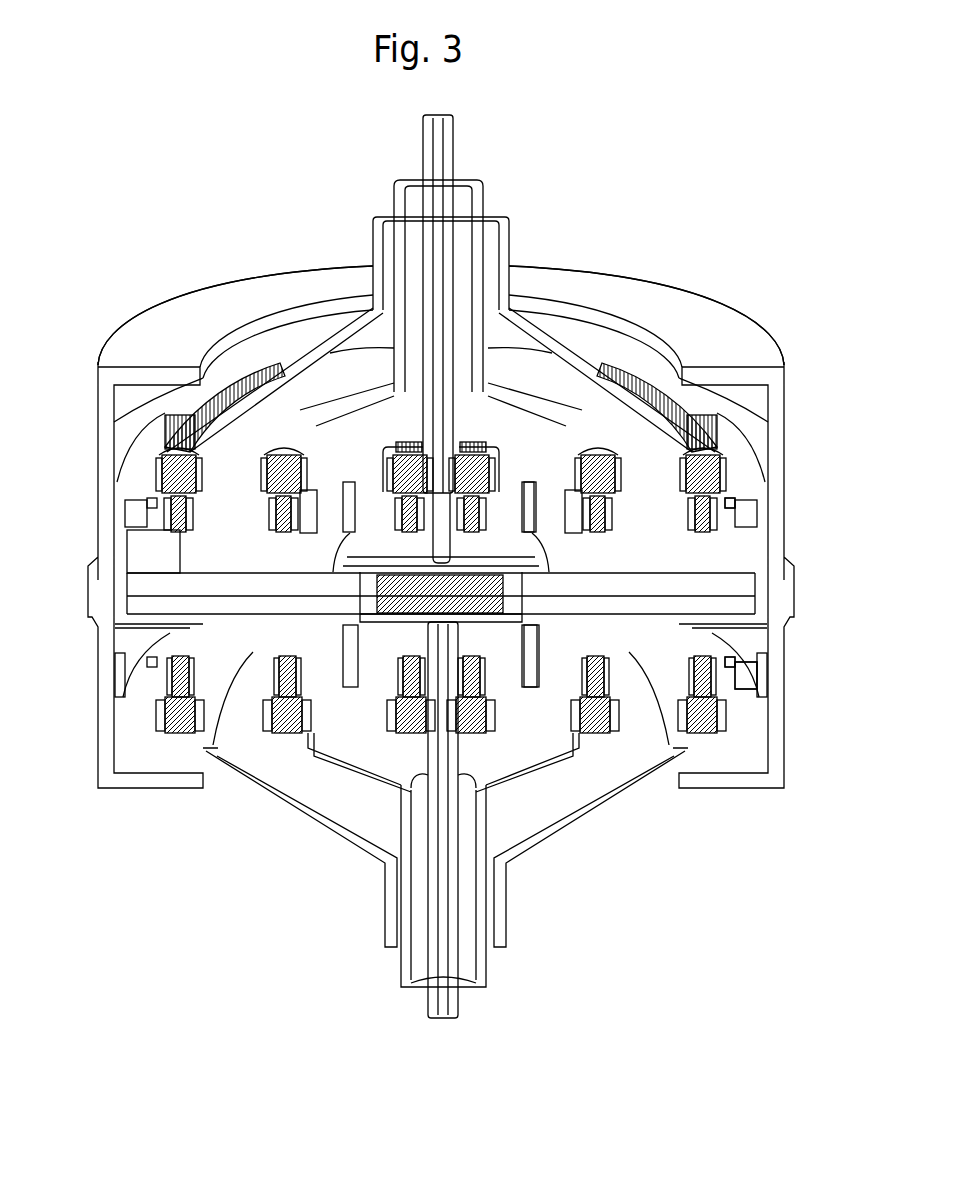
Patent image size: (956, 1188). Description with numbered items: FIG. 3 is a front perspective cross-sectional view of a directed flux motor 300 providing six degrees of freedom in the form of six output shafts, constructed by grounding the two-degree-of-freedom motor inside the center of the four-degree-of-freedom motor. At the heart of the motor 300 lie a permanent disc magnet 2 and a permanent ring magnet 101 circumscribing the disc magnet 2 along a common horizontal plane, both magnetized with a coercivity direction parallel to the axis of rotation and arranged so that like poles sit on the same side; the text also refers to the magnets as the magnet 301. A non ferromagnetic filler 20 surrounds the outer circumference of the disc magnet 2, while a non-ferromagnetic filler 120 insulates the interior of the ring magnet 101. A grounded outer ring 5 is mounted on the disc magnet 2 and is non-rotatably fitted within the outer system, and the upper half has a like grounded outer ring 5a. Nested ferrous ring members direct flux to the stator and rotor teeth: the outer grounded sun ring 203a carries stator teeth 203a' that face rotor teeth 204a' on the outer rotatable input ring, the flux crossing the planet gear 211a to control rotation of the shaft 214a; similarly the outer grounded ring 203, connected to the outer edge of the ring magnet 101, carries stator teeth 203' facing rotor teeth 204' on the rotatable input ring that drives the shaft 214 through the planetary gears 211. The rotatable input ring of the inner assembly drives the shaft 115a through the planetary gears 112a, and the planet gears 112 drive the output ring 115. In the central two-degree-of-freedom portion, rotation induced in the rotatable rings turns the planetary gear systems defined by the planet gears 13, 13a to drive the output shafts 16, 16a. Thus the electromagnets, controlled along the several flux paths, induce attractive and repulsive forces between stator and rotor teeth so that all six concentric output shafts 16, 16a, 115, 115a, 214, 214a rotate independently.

The directed flux motor 300 is at (171, 241).
The magnet 301 is at (742, 328).
The output shaft 16a is at (453, 147).
The shaft 115a is at (483, 200).
The shaft 214a is at (509, 252).
The planetary gears 112a is at (262, 457).
The planet gear 211a is at (262, 471).
The stator teeth 203a' is at (86, 513).
The outer grounded sun ring 203a is at (103, 549).
The non-ferromagnetic filler 120 is at (290, 583).
The non ferromagnetic filler 20 is at (325, 590).
The outer grounded ring 203 is at (82, 675).
The planet gears 13a is at (403, 447).
The grounded outer ring 5a is at (527, 498).
The rotor teeth 204a' is at (793, 493).
The ring magnet 101 is at (745, 581).
The permanent disc magnet 2 is at (712, 598).
The rotor teeth 204' is at (789, 651).
The stator teeth 203' is at (794, 677).
The planetary gears 211 is at (182, 735).
The planet gears 112 is at (287, 735).
The planet gears 13 is at (407, 735).
The grounded outer ring 5 is at (530, 692).
The shaft 214 is at (507, 910).
The output ring 115 is at (486, 972).
The output shaft 16 is at (458, 1008).